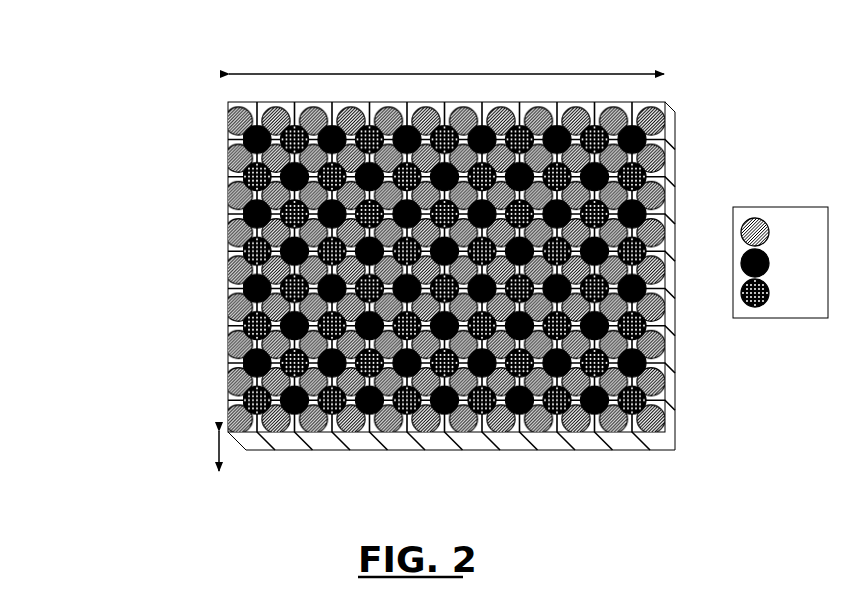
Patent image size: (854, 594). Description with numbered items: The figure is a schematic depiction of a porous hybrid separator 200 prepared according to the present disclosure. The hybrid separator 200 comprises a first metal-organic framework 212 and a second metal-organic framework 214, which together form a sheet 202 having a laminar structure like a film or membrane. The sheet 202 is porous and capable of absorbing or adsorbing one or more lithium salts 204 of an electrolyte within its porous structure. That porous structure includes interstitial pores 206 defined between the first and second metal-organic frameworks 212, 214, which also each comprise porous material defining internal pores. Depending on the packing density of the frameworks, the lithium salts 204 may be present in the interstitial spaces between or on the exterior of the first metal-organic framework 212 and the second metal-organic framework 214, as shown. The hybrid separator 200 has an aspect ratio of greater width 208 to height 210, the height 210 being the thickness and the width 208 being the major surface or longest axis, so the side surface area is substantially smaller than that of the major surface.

The hybrid separator 200 is at (91, 56).
The sheet 202 is at (670, 112).
The lithium salts 204 is at (228, 235).
The interstitial pores 206 is at (233, 133).
The width 208 is at (355, 73).
The height 210 is at (215, 449).
The first metal-organic framework 212 is at (240, 294).
The second metal-organic framework 214 is at (240, 336).